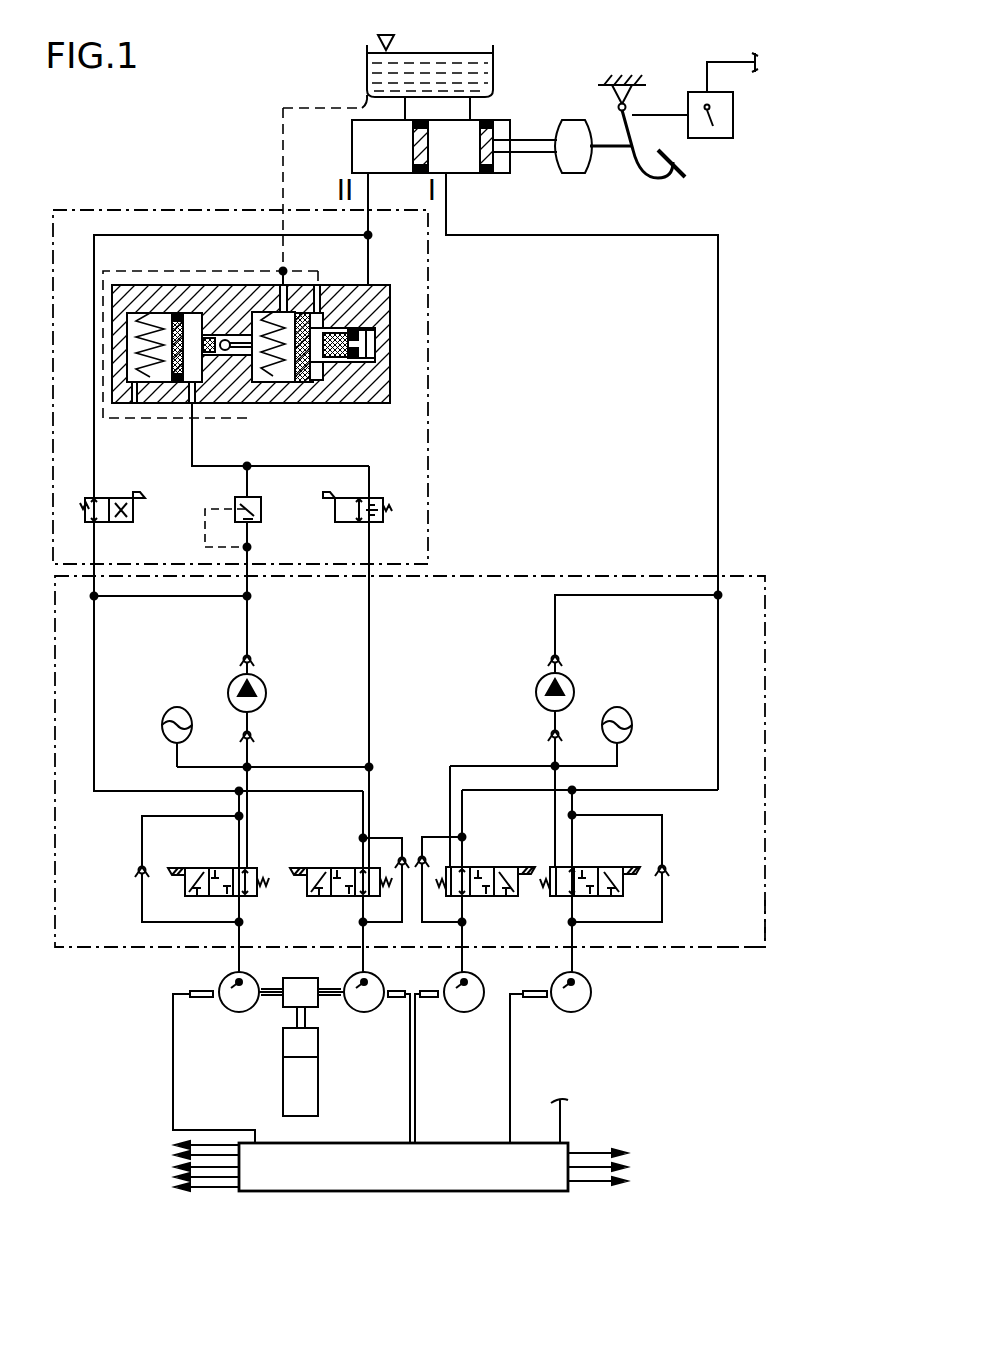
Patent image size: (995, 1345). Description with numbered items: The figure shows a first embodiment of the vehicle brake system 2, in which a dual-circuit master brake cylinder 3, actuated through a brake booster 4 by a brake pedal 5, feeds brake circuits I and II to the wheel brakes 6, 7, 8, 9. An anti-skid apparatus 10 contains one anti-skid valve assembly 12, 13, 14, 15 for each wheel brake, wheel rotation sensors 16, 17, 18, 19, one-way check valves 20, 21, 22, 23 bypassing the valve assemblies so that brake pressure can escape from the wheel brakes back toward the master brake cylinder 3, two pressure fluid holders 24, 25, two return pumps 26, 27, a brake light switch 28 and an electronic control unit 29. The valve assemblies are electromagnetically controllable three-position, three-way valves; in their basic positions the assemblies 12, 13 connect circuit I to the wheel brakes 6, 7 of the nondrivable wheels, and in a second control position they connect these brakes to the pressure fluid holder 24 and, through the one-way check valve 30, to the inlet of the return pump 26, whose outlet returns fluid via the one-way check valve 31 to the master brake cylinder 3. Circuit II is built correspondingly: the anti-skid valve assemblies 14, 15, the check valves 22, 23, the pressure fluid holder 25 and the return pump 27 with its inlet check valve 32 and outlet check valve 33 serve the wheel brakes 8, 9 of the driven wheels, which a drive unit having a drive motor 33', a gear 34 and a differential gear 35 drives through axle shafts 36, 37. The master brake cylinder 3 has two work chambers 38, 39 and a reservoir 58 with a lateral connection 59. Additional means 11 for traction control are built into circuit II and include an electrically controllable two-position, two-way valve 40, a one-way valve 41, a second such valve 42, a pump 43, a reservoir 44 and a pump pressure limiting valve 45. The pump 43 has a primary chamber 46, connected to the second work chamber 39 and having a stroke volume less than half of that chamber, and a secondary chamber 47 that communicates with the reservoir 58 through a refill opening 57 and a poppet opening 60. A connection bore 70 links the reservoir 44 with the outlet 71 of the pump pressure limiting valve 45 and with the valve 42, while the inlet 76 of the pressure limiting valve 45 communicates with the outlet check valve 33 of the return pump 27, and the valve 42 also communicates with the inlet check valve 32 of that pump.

The vehicle brake system 2 is at (165, 197).
The dual-circuit master brake cylinder 3 is at (516, 162).
The brake booster 4 is at (593, 146).
The brake pedal 5 is at (686, 160).
The wheel brake 6 is at (591, 992).
The wheel brake 7 is at (484, 992).
The wheel brake 8 is at (358, 980).
The wheel brake 9 is at (232, 980).
The anti-skid apparatus 10 is at (740, 922).
The means for traction control 11 is at (418, 512).
The anti-skid valve assembly 12 is at (592, 867).
The anti-skid valve assembly 13 is at (478, 896).
The anti-skid valve assembly 14 is at (345, 896).
The anti-skid valve assembly 15 is at (250, 896).
The wheel rotation sensor 16 is at (532, 998).
The wheel rotation sensor 17 is at (428, 998).
The wheel rotation sensor 18 is at (400, 990).
The wheel rotation sensor 19 is at (202, 998).
The one-way check valve 20 is at (670, 866).
The one-way check valve 21 is at (422, 853).
The one-way check valve 22 is at (404, 855).
The one-way check valve 23 is at (135, 870).
The pressure fluid holder 24 is at (632, 725).
The pressure fluid holder 25 is at (160, 727).
The return pump 26 is at (574, 690).
The return pump 27 is at (266, 692).
The brake light switch 28 is at (697, 95).
The electronic control unit 29 is at (401, 1166).
The one-way check valve 30 is at (550, 734).
The one-way check valve 31 is at (548, 659).
The inlet one-way check valve 32 is at (255, 735).
The outlet one-way check valve 33 is at (219, 665).
The drive motor 33' is at (272, 1086).
The gear 34 is at (312, 1044).
The differential gear 35 is at (310, 990).
The axle shaft 36 is at (332, 996).
The axle shaft 37 is at (270, 996).
The master cylinder pressure chamber 38 is at (462, 146).
The second work chamber 39 is at (397, 146).
The electrically controllable 2/2-way valve 40 is at (94, 497).
The one-way valve 41 is at (128, 498).
The second electrically controllable 2/2-way valve 42 is at (372, 498).
The pump 43 is at (200, 408).
The reservoir 44 is at (112, 408).
The pump pressure limiting valve 45 is at (262, 508).
The primary chamber 46 is at (375, 343).
The secondary chamber 47 is at (258, 306).
The refill opening 57 is at (320, 290).
The reservoir 58 is at (480, 68).
The connection 59 is at (362, 104).
The poppet opening 60 is at (285, 287).
The connection bore 70 is at (194, 405).
The outlet 71 is at (245, 497).
The inlet 76 is at (250, 522).